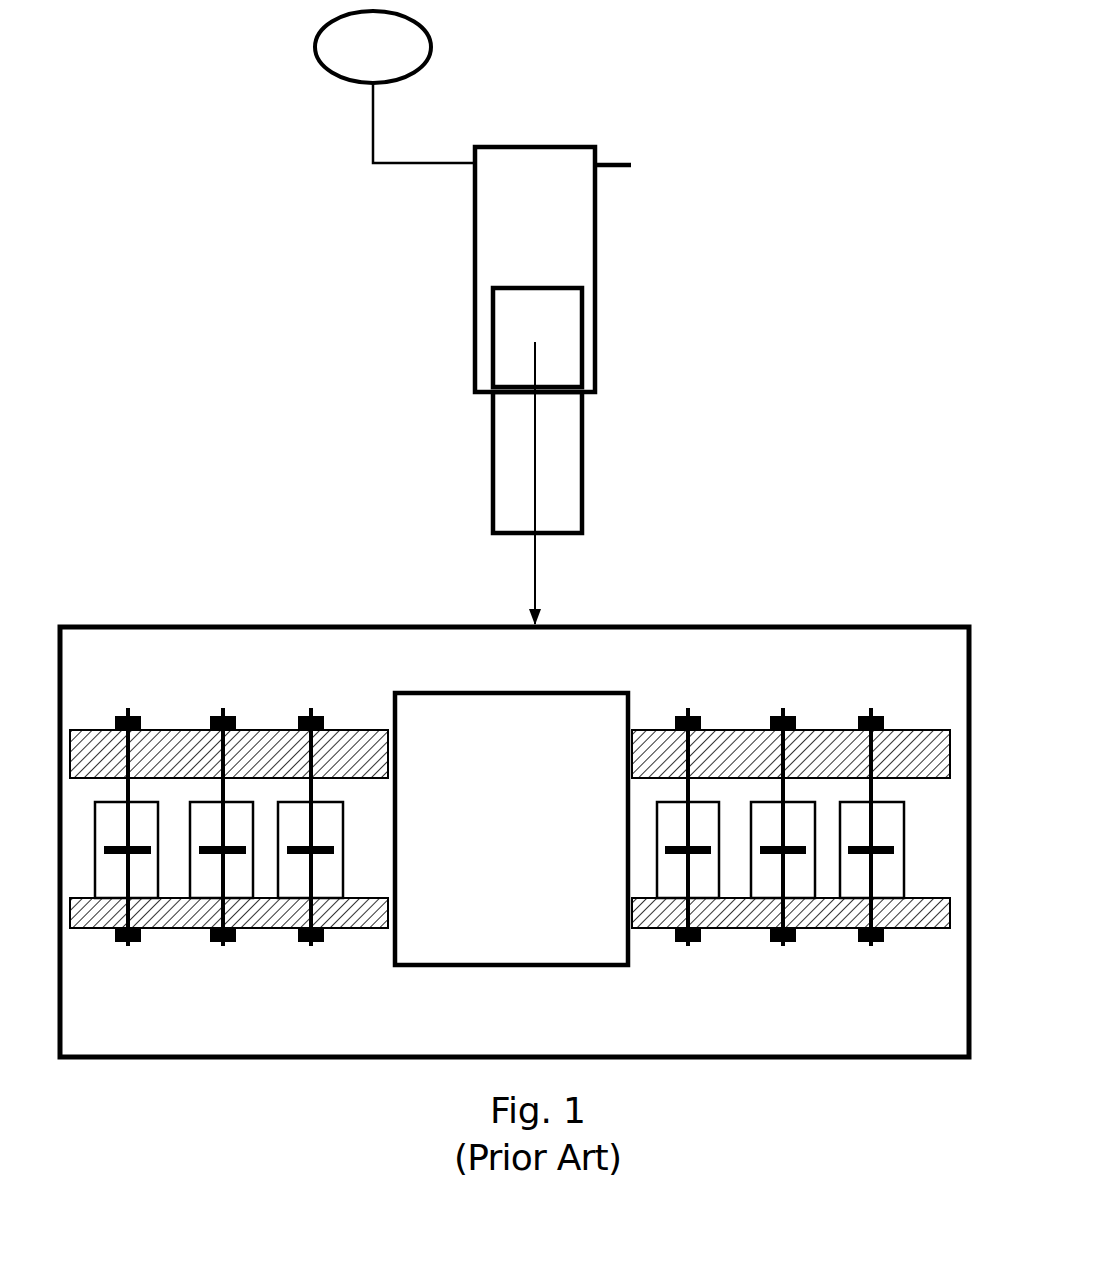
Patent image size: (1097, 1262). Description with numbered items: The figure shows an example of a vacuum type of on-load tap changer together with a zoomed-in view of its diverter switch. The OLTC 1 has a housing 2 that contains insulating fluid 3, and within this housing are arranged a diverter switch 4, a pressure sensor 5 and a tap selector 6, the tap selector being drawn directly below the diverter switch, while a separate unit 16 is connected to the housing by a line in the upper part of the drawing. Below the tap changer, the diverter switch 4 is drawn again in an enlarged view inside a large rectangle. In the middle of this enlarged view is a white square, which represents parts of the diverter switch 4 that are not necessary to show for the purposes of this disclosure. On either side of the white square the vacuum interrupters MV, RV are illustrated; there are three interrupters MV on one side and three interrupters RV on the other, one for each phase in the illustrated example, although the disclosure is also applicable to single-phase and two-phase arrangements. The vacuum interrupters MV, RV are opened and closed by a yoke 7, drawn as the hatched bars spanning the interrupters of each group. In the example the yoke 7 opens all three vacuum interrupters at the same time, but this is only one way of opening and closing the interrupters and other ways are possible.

The OLTC 1 is at (552, 98).
The housing 2 is at (471, 203).
The insulating fluid 3 is at (535, 201).
The diverter switch 4 is at (491, 343).
The pressure sensor 5 is at (614, 156).
The tap selector 6 is at (586, 449).
The yoke 7 is at (352, 726).
The control device 16 is at (331, 76).
The vacuum interrupters MV is at (286, 879).
The vacuum interrupters RV is at (846, 883).